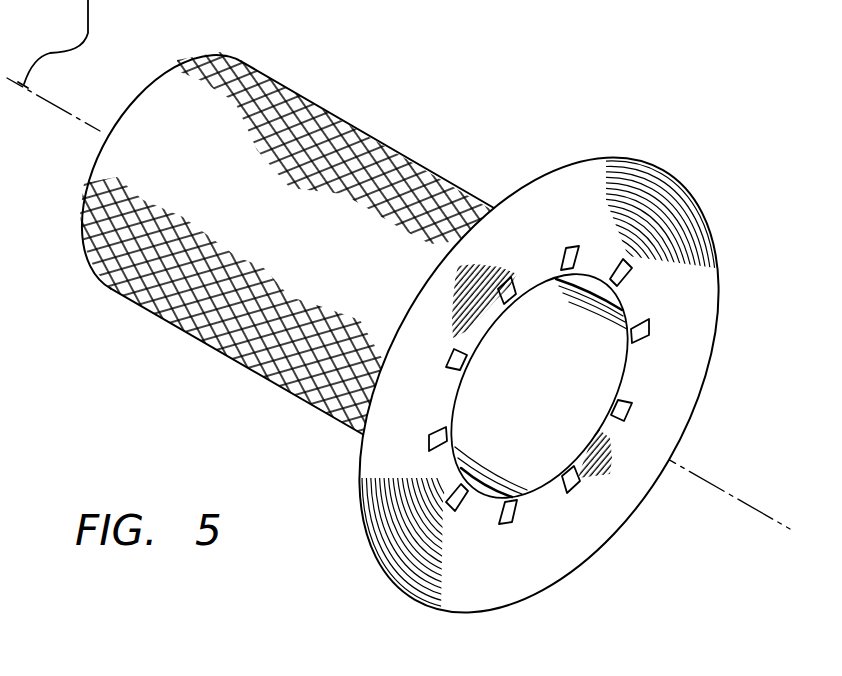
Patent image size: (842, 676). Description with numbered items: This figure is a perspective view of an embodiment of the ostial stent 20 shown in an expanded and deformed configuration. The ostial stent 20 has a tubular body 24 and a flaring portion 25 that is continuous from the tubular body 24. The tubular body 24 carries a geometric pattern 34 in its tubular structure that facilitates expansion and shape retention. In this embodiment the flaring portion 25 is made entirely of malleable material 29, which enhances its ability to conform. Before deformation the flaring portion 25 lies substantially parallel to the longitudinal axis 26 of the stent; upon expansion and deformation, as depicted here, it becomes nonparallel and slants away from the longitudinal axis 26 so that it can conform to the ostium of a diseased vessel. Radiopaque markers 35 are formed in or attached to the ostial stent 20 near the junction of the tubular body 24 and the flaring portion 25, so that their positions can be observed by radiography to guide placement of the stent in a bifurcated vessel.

The ostial stent 20 is at (303, 87).
The tubular body 24 is at (426, 156).
The flaring portion 25 is at (584, 0).
The longitudinal axis 26 is at (740, 497).
The malleable material 29 is at (672, 302).
The geometric pattern 34 is at (308, 372).
The radiopaque markers 35 is at (522, 296).